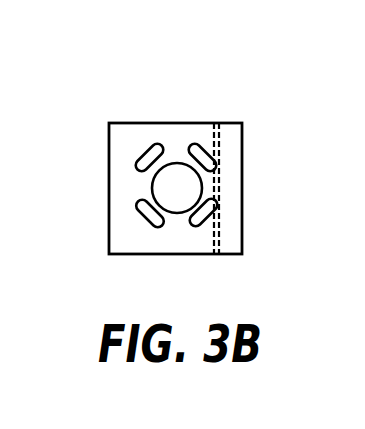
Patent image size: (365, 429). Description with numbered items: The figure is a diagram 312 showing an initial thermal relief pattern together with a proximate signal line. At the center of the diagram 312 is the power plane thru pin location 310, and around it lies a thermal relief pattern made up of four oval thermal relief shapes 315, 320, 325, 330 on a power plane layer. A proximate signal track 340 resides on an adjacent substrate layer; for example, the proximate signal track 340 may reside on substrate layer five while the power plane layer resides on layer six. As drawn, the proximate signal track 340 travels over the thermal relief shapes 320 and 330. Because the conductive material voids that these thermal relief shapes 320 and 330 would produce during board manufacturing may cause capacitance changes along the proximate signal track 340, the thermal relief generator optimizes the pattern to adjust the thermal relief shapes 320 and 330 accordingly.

The diagram 312 is at (126, 148).
The power plane thru pin location 310 is at (118, 175).
The oval thermal relief shape 315 is at (118, 136).
The oval thermal relief shape 320 is at (166, 122).
The oval thermal relief shape 325 is at (106, 226).
The oval thermal relief shape 330 is at (168, 243).
The proximate signal track 340 is at (268, 185).